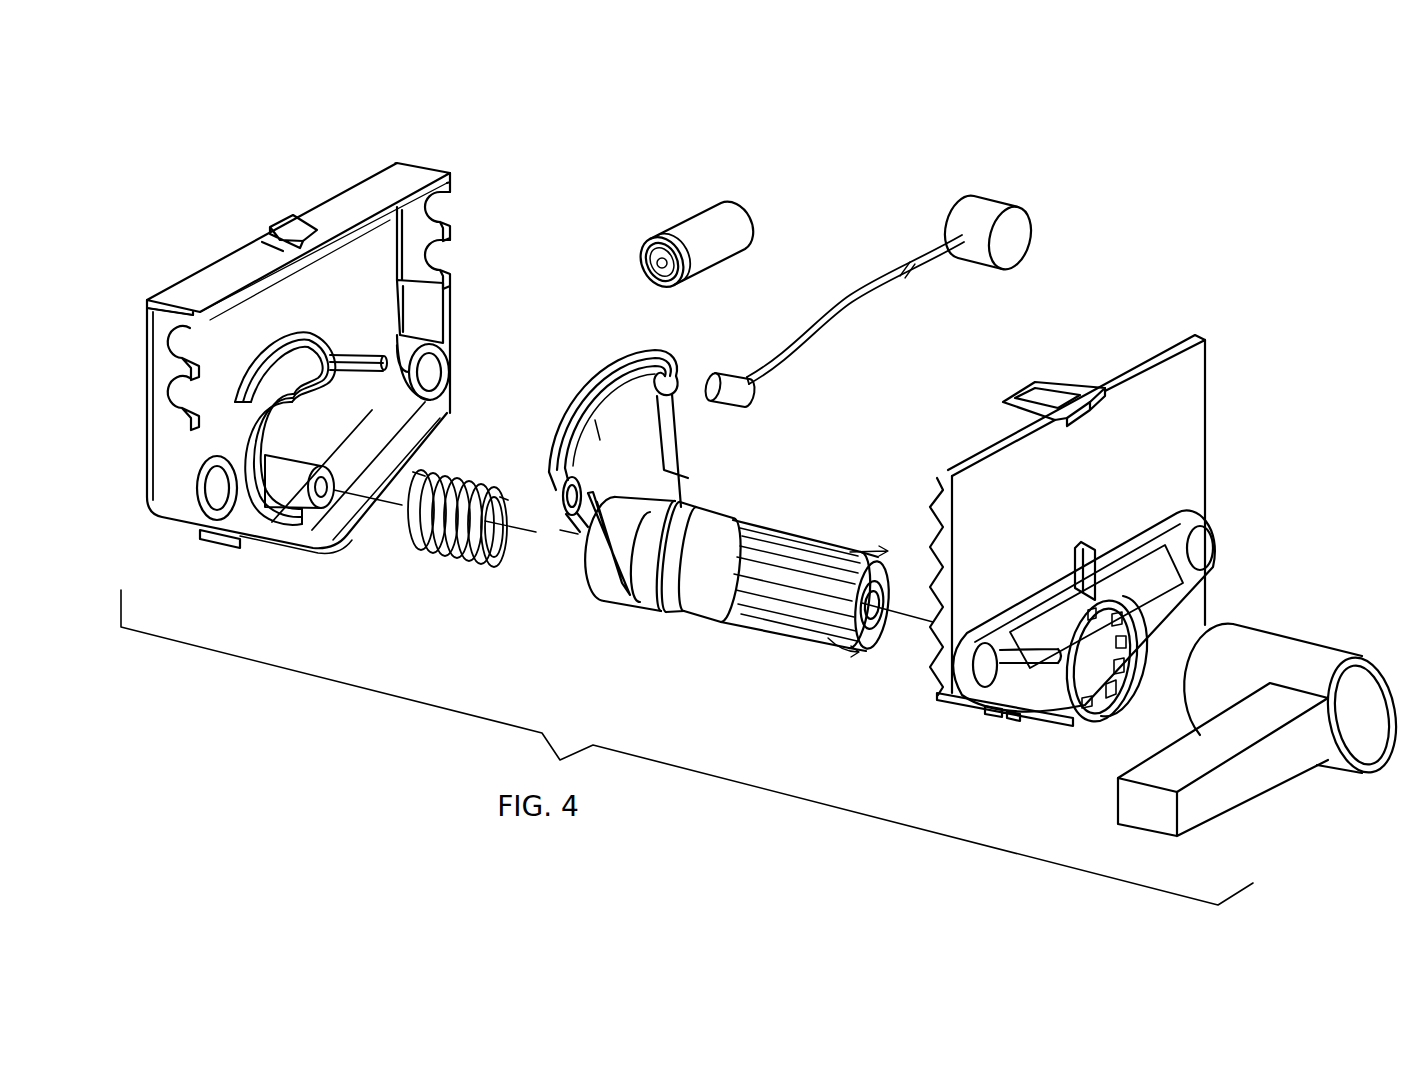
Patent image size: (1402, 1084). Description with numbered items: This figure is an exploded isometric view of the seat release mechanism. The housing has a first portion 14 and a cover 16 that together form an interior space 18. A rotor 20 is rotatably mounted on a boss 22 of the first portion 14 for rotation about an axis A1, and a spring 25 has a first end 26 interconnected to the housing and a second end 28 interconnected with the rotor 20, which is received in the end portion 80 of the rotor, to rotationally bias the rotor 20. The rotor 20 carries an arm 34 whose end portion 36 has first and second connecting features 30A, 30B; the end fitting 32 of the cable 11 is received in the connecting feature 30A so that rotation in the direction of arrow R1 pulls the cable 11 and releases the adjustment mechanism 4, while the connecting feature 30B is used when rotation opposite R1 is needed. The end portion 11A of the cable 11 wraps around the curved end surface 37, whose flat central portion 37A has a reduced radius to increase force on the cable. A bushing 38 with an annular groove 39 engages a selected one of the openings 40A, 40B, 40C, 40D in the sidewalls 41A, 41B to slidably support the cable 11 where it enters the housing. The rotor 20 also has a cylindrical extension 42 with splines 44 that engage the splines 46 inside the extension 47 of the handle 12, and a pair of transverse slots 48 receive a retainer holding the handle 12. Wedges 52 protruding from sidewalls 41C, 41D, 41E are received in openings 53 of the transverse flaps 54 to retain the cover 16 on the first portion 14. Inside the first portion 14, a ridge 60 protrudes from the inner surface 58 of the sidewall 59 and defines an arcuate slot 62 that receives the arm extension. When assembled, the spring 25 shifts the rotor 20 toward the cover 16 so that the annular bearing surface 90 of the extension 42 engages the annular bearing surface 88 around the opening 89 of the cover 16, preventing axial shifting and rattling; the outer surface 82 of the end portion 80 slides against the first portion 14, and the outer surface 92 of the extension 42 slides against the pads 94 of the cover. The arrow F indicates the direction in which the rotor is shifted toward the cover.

The adjustment mechanism 4 is at (962, 207).
The cable 11 is at (837, 309).
The end portion of cable 11A is at (768, 360).
The handle 12 is at (1140, 773).
The first portion of housing 14 is at (418, 162).
The cover 16 is at (1053, 543).
The interior space 18 is at (233, 308).
The rotor 20 is at (710, 566).
The boss 22 is at (327, 487).
The spring 25 is at (464, 517).
The first end of spring 26 is at (417, 465).
The second end of spring 28 is at (503, 497).
The first connecting feature 30A is at (578, 520).
The second connecting feature 30B is at (680, 360).
The cable end fitting 32 is at (720, 407).
The arm 34 is at (683, 460).
The end portion of arm 36 is at (606, 405).
The curved end surface 37 is at (610, 400).
The flat central portion 37A is at (600, 393).
The bushing 38 is at (698, 240).
The annular groove 39 is at (697, 270).
The opening 40A is at (173, 343).
The opening 40B is at (175, 397).
The opening 40C is at (434, 205).
The opening 40D is at (434, 253).
The sidewall 41A is at (165, 457).
The sidewall 41B is at (430, 315).
The sidewall 41C is at (363, 190).
The sidewall 41D is at (287, 543).
The sidewall 41E is at (357, 503).
The cylindrical extension 42 is at (795, 553).
The splines 44 is at (827, 547).
The splines 46 is at (1254, 691).
The extension of handle 47 is at (1283, 647).
The transverse slots 48 is at (752, 540).
The wedges 52 is at (288, 227).
The openings 53 is at (1060, 403).
The transverse flaps 54 is at (1043, 380).
The inner surface 58 is at (377, 227).
The sidewall 59 is at (327, 260).
The ridge 60 is at (300, 328).
The arcuate slot 62 is at (280, 367).
The end portion of rotor 80 is at (587, 590).
The cylindrical outer surface 82 is at (603, 600).
The annular bearing surface 88 is at (1033, 707).
The opening of cover 89 is at (1133, 667).
The annular bearing surface 90 is at (697, 617).
The outer surface of extension 92 is at (720, 532).
The pads 94 is at (1133, 600).
The axis A1 is at (527, 533).
The force direction F is at (887, 548).
The direction of rotation R1 is at (856, 657).